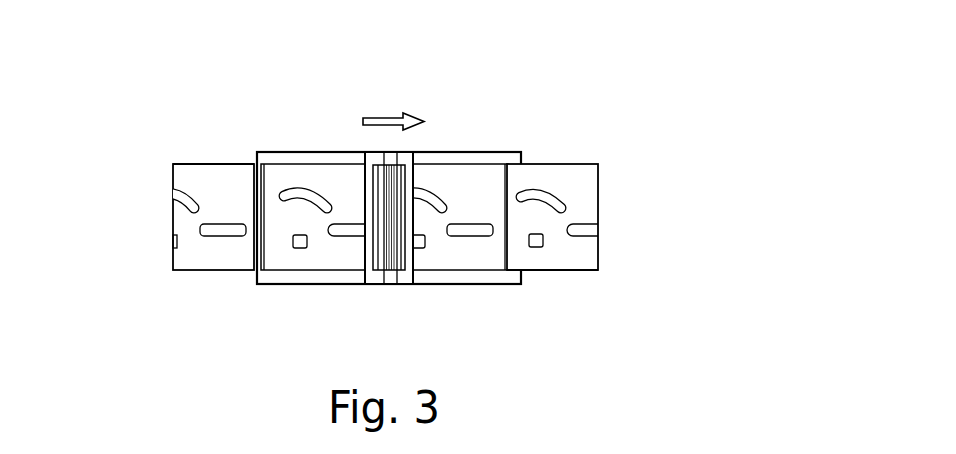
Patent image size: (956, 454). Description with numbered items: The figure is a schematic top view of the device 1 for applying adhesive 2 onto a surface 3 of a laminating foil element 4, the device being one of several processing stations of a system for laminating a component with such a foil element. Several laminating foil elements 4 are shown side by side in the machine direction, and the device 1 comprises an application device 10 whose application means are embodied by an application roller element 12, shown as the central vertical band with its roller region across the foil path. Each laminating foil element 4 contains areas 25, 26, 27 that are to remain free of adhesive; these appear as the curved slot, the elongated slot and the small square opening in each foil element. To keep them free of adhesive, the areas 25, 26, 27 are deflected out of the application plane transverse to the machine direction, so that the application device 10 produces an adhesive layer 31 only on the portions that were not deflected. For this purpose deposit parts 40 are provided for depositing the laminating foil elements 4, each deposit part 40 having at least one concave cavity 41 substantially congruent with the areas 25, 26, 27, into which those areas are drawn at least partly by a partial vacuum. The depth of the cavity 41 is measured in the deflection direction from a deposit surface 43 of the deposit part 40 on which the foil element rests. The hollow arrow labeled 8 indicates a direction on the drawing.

The device 1 is at (603, 78).
The adhesive 2 is at (369, 268).
The surface 3 is at (186, 257).
The laminating foil element 4 is at (586, 158).
The direction of movement 8 is at (386, 117).
The application device 10 is at (400, 276).
The application roller element 12 is at (392, 272).
The area 25 is at (535, 193).
The area 26 is at (590, 230).
The area 27 is at (537, 250).
The adhesive layer 31 is at (592, 252).
The deposit part 40 is at (463, 163).
The concave cavity 41 is at (180, 200).
The deposit surface 43 is at (216, 178).